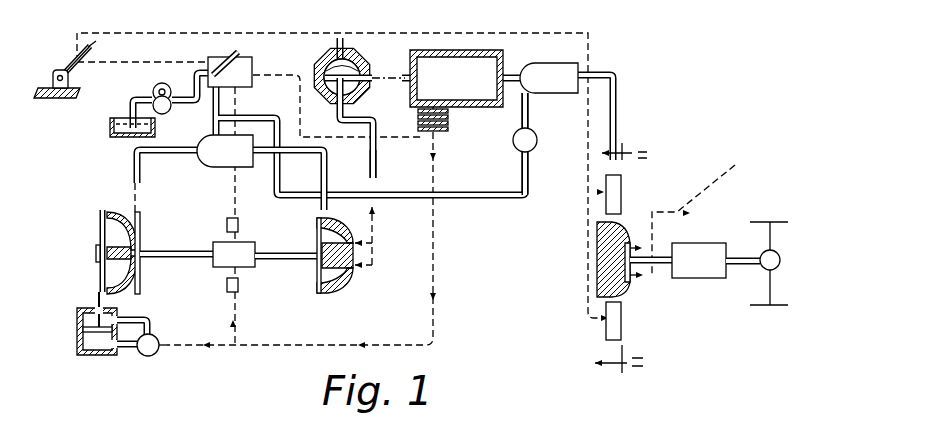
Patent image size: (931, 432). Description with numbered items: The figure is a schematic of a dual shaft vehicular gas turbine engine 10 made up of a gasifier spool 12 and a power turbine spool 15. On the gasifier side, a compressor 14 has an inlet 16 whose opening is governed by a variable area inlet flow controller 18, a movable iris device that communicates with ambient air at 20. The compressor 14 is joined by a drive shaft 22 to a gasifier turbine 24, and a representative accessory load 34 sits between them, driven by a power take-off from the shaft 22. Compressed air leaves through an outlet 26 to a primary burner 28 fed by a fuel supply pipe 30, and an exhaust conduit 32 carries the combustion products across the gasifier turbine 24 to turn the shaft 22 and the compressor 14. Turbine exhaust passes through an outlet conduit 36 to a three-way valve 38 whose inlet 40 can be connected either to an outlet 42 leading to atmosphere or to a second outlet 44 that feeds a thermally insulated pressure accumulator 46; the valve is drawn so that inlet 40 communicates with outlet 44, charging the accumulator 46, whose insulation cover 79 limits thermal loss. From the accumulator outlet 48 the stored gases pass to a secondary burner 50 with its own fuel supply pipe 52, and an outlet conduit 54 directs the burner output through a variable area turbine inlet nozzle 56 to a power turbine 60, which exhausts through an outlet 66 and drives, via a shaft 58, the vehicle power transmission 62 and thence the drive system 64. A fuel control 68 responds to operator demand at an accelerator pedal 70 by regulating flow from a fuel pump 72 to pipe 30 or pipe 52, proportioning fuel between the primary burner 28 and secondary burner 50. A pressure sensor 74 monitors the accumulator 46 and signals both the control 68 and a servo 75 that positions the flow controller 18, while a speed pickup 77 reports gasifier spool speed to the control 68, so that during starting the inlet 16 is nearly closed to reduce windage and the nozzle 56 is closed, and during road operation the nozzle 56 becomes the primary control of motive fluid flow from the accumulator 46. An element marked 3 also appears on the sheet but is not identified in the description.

The section line of FIG. 3 is at (640, 145).
The vehicular gas turbine engine 10 is at (436, 43).
The gasifier spool 12 is at (281, 261).
The compressor 14 is at (140, 242).
The power turbine spool 15 is at (660, 280).
The inlet 16 is at (100, 234).
The variable area inlet flow controller 18 is at (100, 276).
The ambient air 20 is at (100, 264).
The drive shaft 22 is at (186, 258).
The gasifier turbine 24 is at (335, 268).
The outlet 26 is at (183, 152).
The primary burner 28 is at (208, 162).
The fuel supply pipe 30 is at (213, 120).
The exhaust conduit 32 is at (307, 153).
The accessory load 34 is at (226, 267).
The outlet conduit 36 is at (370, 163).
The three-way valve 38 is at (330, 103).
The inlet 40 is at (340, 128).
The outlet 42 is at (346, 42).
The second outlet 44 is at (372, 84).
The pressure accumulator 46 is at (500, 50).
The outlet 48 is at (515, 73).
The secondary burner 50 is at (550, 68).
The fuel supply pipe 52 is at (522, 117).
The outlet conduit 54 is at (597, 73).
The variable area turbine inlet nozzle 56 is at (628, 184).
The shaft 58 is at (657, 258).
The power turbine 60 is at (607, 270).
The vehicle power transmission 62 is at (713, 247).
The drive system 64 is at (780, 258).
The outlet 66 is at (704, 212).
The fuel control 68 is at (252, 65).
The accelerator pedal 70 is at (78, 48).
The fuel pump 72 is at (157, 88).
The pressure sensor 74 is at (448, 134).
The servo 75 is at (90, 352).
The speed pickup 77 is at (238, 224).
The insulation cover 79 is at (472, 108).